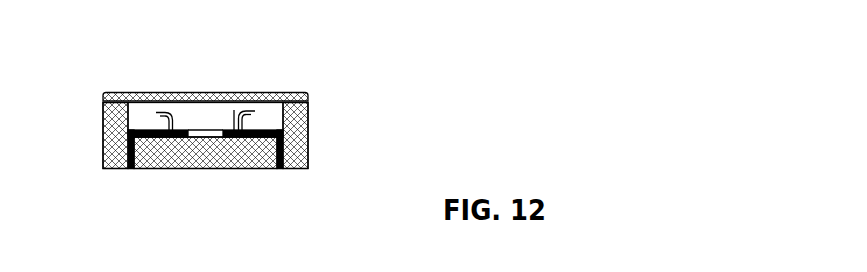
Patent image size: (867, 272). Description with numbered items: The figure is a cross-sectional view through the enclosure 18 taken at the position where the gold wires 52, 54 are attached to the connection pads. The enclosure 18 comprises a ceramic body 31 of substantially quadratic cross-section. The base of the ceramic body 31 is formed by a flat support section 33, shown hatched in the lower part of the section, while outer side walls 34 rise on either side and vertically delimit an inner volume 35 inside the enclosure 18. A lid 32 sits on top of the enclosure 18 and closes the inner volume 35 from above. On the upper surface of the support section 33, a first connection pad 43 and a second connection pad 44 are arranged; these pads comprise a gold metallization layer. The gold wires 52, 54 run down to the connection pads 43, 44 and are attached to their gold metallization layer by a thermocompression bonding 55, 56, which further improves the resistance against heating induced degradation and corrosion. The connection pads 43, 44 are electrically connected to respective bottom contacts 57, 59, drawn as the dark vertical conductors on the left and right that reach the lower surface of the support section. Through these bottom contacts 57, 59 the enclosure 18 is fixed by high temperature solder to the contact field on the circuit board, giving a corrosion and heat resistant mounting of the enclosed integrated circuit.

The enclosure 18 is at (317, 97).
The ceramic body 31 is at (308, 150).
The lid 32 is at (148, 95).
The support section 33 is at (180, 152).
The outer side walls 34 is at (112, 110).
The inner volume 35 is at (193, 113).
The first connection pad 43 is at (234, 110).
The second connection pad 44 is at (182, 130).
The gold wire 52 is at (252, 111).
The gold wire 54 is at (156, 114).
The thermocompression bonding 55 is at (158, 137).
The thermocompression bonding 56 is at (253, 137).
The bottom contact 57 is at (129, 168).
The bottom contact 59 is at (279, 168).